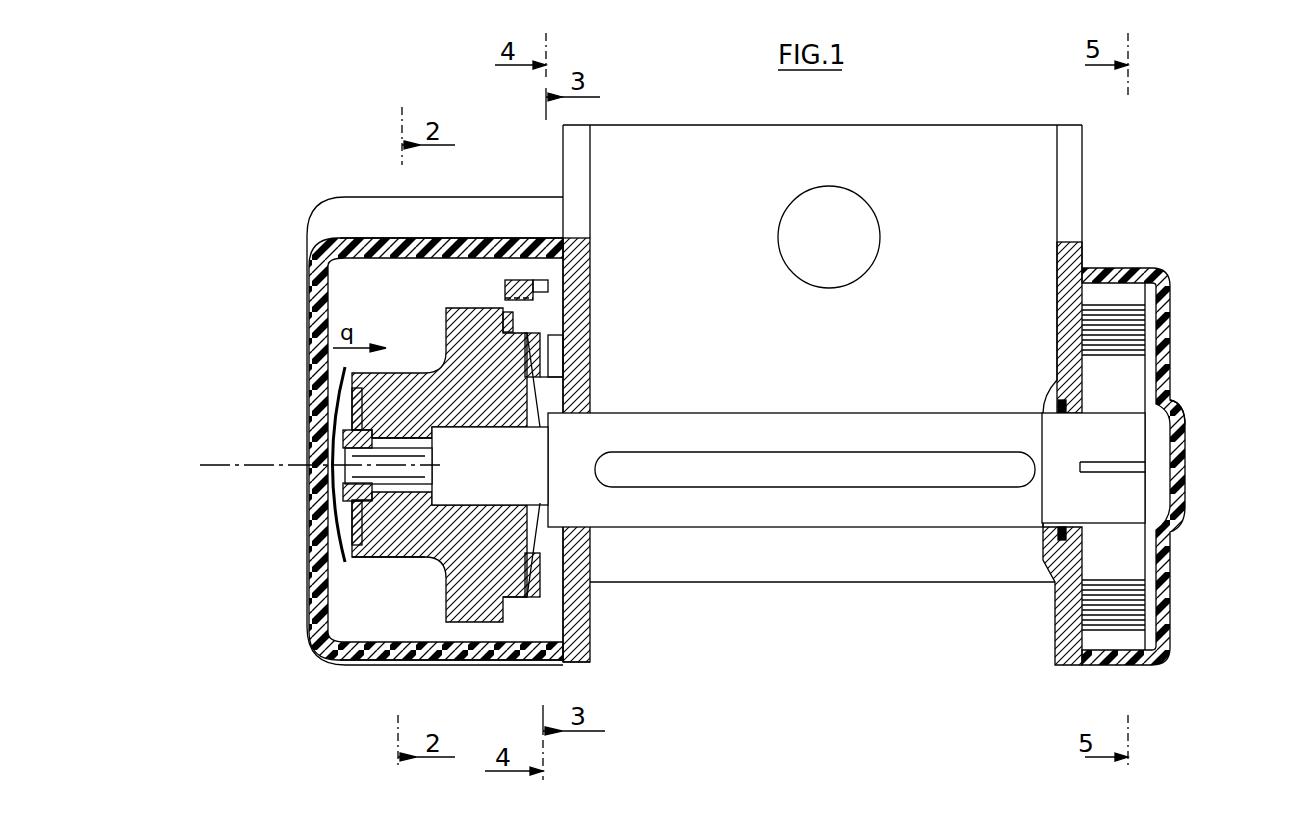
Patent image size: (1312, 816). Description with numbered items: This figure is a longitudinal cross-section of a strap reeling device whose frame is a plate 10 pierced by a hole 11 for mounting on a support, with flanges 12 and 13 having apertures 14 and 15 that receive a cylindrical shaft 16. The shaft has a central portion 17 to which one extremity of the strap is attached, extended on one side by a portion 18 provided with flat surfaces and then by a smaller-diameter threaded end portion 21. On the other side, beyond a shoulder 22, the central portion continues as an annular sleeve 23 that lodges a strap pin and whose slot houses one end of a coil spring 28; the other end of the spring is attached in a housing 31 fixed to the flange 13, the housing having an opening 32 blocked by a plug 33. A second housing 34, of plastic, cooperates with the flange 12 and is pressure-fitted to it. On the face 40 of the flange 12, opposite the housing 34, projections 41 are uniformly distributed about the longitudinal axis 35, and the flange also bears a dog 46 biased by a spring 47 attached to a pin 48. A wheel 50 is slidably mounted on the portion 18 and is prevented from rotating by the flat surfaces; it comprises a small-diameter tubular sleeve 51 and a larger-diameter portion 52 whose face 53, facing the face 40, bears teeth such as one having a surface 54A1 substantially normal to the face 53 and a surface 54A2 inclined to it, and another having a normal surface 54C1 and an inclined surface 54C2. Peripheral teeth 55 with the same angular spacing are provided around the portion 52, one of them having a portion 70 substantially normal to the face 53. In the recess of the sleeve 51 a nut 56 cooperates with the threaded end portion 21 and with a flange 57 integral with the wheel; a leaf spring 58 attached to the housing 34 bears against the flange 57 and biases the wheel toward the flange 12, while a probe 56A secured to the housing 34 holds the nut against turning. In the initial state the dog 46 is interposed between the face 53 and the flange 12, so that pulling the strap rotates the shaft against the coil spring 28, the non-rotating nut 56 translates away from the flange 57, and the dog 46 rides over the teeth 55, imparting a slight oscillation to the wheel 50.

The plate 10 is at (897, 560).
The hole 11 is at (828, 195).
The flange 12 is at (575, 628).
The flange 13 is at (1065, 630).
The aperture 14 is at (578, 420).
The aperture 15 is at (1045, 418).
The cylindrical shaft 16 is at (800, 540).
The central portion 17 is at (804, 405).
The portion 18 is at (505, 497).
The threaded end portion 21 is at (357, 475).
The shoulder 22 is at (1055, 392).
The annular sleeve 23 is at (1118, 498).
The coil spring 28 is at (1128, 332).
The housing 31 is at (1165, 259).
The opening 32 is at (1185, 415).
The plug 33 is at (1185, 450).
The second housing 34 is at (300, 648).
The longitudinal axis 35 is at (225, 465).
The face 40 is at (560, 610).
The projections 41 is at (560, 357).
The dog 46 is at (540, 328).
The spring 47 is at (519, 279).
The pin 48 is at (548, 275).
The wheel 50 is at (425, 342).
The tubular sleeve 51 is at (378, 543).
The larger diameter portion 52 is at (464, 326).
The face 53 is at (523, 585).
The surface 54A1 is at (548, 404).
The surface 54A2 is at (560, 377).
The surface 54C1 is at (540, 562).
The surface 54C2 is at (532, 537).
The teeth 55 is at (548, 318).
The nut 56 is at (355, 513).
The probe 56A is at (400, 430).
The flange 57 is at (345, 432).
The leaf spring 58 is at (338, 410).
The portion 70 is at (538, 298).